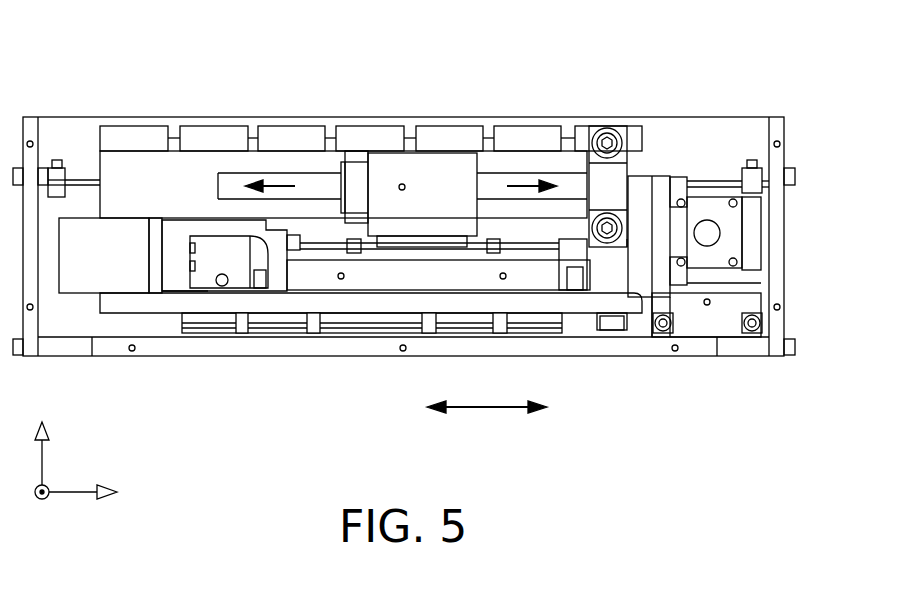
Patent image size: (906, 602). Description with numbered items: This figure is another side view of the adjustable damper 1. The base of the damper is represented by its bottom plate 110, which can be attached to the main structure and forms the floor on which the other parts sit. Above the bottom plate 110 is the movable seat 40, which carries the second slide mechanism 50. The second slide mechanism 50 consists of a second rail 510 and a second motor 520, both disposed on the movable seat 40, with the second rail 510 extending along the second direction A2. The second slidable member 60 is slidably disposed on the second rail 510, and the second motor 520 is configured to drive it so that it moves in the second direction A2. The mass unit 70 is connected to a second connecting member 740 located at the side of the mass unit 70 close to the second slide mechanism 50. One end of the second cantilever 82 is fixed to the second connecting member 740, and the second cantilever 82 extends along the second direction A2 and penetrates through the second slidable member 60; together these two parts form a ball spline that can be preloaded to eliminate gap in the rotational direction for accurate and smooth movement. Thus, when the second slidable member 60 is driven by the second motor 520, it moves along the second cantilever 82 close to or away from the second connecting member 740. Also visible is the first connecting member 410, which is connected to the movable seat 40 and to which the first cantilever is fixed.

The adjustable damper 1 is at (98, 25).
The mass unit 70 is at (514, 116).
The second cantilever 82 is at (308, 185).
The second slidable member 60 is at (400, 196).
The second connecting member 740 is at (607, 183).
The first connecting member 410 is at (683, 227).
The movable seat 40 is at (585, 302).
The bottom plate 110 is at (657, 348).
The second slide mechanism 50 is at (340, 400).
The second motor 520 is at (122, 265).
The second rail 510 is at (318, 272).
The second direction A2 is at (487, 420).